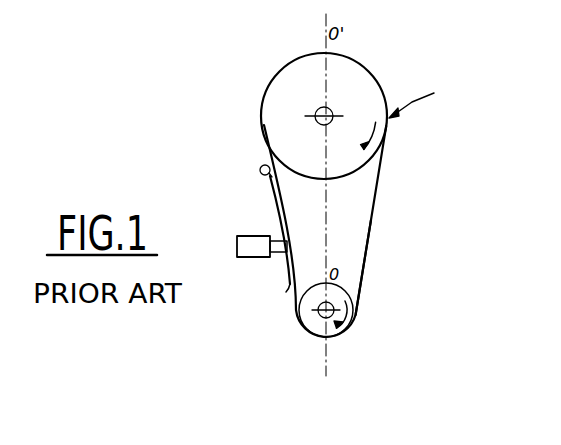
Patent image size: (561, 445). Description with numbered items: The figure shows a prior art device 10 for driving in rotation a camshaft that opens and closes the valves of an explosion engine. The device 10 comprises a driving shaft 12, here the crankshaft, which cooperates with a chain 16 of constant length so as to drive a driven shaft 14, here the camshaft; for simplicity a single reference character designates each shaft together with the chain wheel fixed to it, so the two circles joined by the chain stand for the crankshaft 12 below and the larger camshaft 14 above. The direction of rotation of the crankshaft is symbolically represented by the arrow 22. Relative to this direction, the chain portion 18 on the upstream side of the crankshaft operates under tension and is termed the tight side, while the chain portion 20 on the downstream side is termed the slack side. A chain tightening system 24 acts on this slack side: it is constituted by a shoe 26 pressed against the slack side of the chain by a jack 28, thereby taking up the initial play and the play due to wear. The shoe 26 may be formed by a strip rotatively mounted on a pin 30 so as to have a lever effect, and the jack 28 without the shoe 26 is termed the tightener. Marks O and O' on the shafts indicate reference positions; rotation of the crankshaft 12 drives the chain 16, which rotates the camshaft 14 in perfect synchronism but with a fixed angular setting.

The device 10 is at (424, 99).
The driving shaft 12 is at (313, 338).
The driven shaft 14 is at (369, 90).
The chain 16 is at (364, 265).
The chain portion 18 is at (380, 172).
The chain portion 20 is at (293, 212).
The arrow 22 is at (356, 322).
The chain tightening system 24 is at (282, 203).
The shoe 26 is at (289, 283).
The jack 28 is at (241, 254).
The pin 30 is at (260, 172).